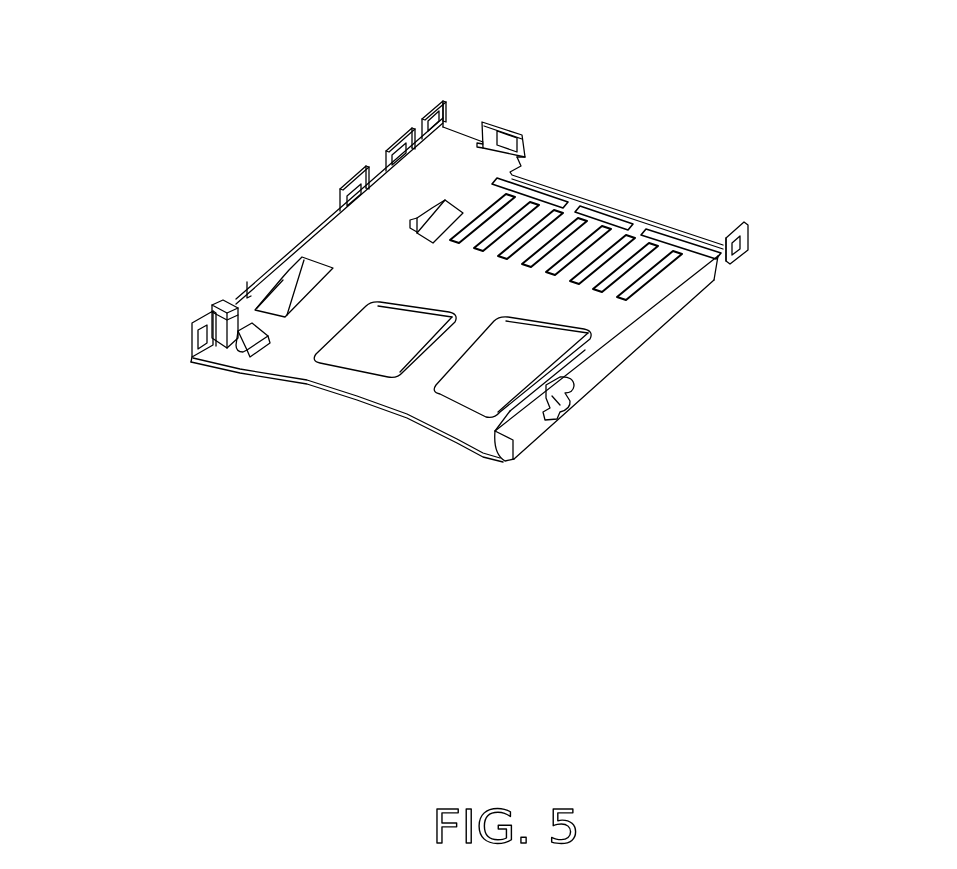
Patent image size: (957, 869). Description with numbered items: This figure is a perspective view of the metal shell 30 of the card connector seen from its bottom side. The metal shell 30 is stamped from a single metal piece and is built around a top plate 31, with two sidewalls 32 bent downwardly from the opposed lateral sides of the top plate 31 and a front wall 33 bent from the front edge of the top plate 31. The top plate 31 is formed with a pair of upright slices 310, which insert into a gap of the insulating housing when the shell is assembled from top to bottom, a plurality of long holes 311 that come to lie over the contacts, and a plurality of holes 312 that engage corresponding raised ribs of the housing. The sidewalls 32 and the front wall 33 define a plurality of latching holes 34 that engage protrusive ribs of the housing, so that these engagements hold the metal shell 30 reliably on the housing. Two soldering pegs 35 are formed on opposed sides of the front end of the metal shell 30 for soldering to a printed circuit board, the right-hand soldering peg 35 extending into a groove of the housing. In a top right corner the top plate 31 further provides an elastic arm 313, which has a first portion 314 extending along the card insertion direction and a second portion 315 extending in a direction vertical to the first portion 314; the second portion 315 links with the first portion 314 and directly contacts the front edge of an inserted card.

The metal shell 30 is at (797, 222).
The top plate 31 is at (357, 256).
The sidewalls 32 is at (262, 258).
The front wall 33 is at (522, 128).
The latching holes 34 is at (447, 122).
The soldering pegs 35 is at (222, 310).
The upright slice 310 is at (190, 366).
The long holes 311 is at (638, 246).
The holes 312 is at (612, 216).
The elastic arm 313 is at (424, 20).
The first portion 314 is at (432, 208).
The second portion 315 is at (344, 242).